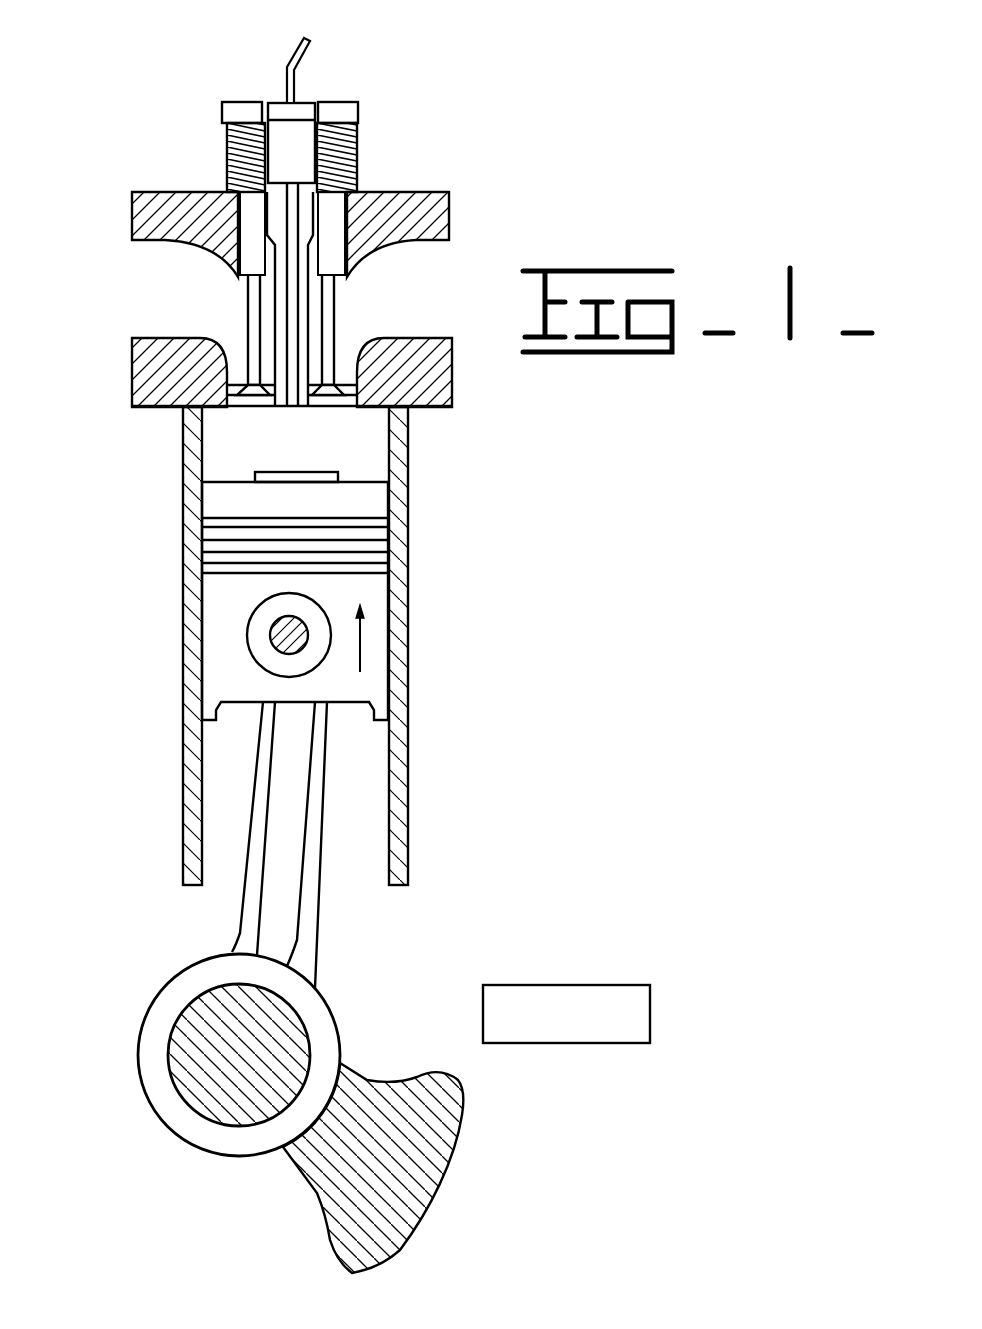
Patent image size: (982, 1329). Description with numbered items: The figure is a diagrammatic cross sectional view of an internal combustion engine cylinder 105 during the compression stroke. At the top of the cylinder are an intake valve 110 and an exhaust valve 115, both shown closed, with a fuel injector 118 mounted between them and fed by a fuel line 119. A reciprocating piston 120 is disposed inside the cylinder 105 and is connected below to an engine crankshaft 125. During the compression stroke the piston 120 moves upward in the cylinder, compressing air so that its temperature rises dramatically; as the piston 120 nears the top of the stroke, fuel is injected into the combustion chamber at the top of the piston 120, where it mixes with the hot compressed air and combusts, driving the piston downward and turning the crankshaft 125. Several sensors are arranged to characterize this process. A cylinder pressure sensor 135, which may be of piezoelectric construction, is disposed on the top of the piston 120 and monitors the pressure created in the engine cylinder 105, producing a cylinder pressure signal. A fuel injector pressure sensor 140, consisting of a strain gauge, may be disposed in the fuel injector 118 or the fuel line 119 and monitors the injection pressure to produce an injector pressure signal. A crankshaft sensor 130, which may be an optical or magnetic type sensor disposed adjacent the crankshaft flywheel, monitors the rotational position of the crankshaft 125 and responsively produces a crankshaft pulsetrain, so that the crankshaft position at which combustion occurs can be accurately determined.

The engine cylinder 105 is at (440, 556).
The intake valve 110 is at (227, 147).
The exhaust valve 115 is at (355, 153).
The fuel injector 118 is at (280, 100).
The fuel line 119 is at (300, 43).
The fuel injector pressure sensor 140 is at (301, 100).
The cylinder pressure sensor 135 is at (283, 472).
The piston 120 is at (233, 665).
The crankshaft 125 is at (440, 1193).
The crankshaft sensor 130 is at (630, 985).